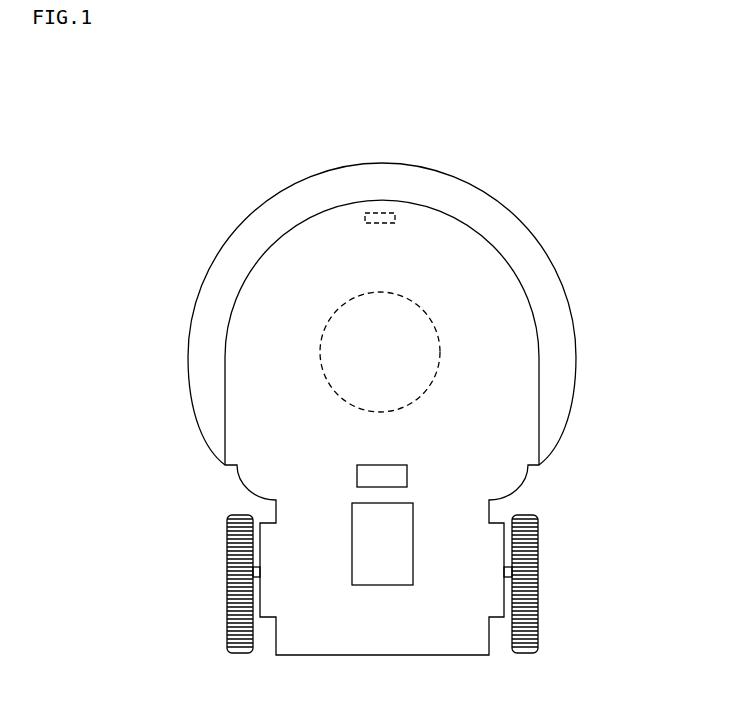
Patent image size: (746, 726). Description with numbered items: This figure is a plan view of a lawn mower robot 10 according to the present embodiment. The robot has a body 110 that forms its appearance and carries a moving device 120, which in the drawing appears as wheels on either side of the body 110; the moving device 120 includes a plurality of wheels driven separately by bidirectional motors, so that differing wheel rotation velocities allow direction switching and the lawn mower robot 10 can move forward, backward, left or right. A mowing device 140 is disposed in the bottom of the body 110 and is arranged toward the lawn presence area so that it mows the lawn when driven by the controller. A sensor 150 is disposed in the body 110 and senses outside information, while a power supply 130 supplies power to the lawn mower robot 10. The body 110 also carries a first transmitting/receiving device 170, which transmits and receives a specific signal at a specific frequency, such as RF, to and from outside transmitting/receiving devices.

The lawn mower robot 10 is at (104, 82).
The body 110 is at (172, 322).
The moving device 120 is at (222, 580).
The power supply 130 is at (389, 585).
The mowing device 140 is at (427, 308).
The sensor 150 is at (381, 212).
The first transmitting/receiving device 170 is at (407, 476).